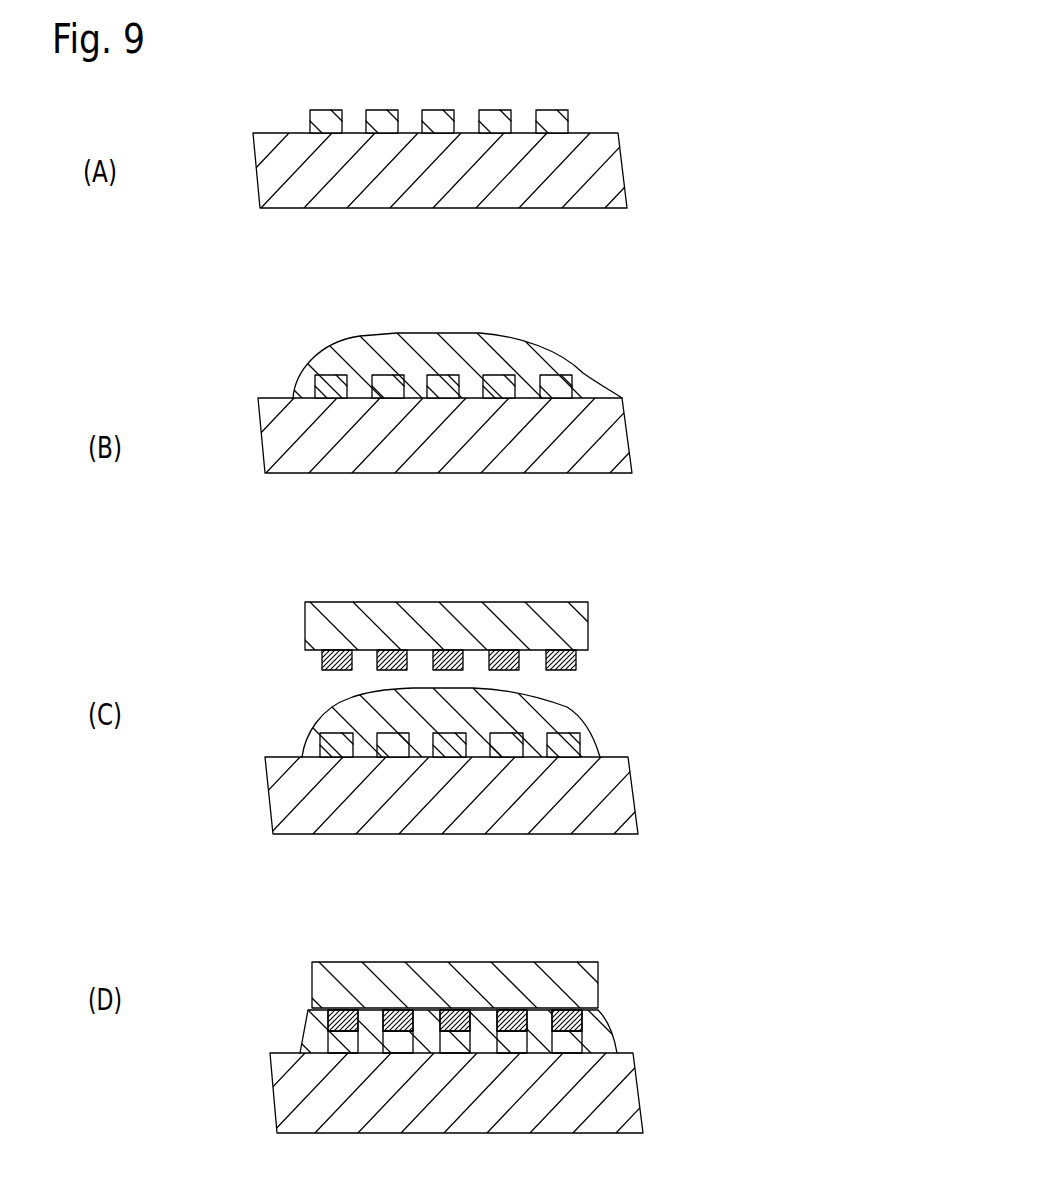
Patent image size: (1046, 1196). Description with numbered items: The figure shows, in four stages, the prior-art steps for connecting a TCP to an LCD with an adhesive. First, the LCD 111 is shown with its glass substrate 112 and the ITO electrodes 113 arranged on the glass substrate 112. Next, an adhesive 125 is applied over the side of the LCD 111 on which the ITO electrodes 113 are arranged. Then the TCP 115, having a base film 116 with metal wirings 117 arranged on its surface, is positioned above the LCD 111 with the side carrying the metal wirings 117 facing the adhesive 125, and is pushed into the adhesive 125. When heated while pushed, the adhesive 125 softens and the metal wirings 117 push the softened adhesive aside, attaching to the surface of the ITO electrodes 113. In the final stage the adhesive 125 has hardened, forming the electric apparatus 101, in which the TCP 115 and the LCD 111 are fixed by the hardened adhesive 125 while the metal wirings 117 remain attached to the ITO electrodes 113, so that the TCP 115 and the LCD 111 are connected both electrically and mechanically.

The electric apparatus 101 is at (225, 950).
The LCD 111 is at (501, 619).
The glass substrate 112 is at (613, 162).
The ITO electrodes 113 is at (568, 112).
The TCP 115 is at (526, 803).
The base film 116 is at (583, 613).
The metal wirings 117 is at (573, 648).
The adhesive 125 is at (563, 350).